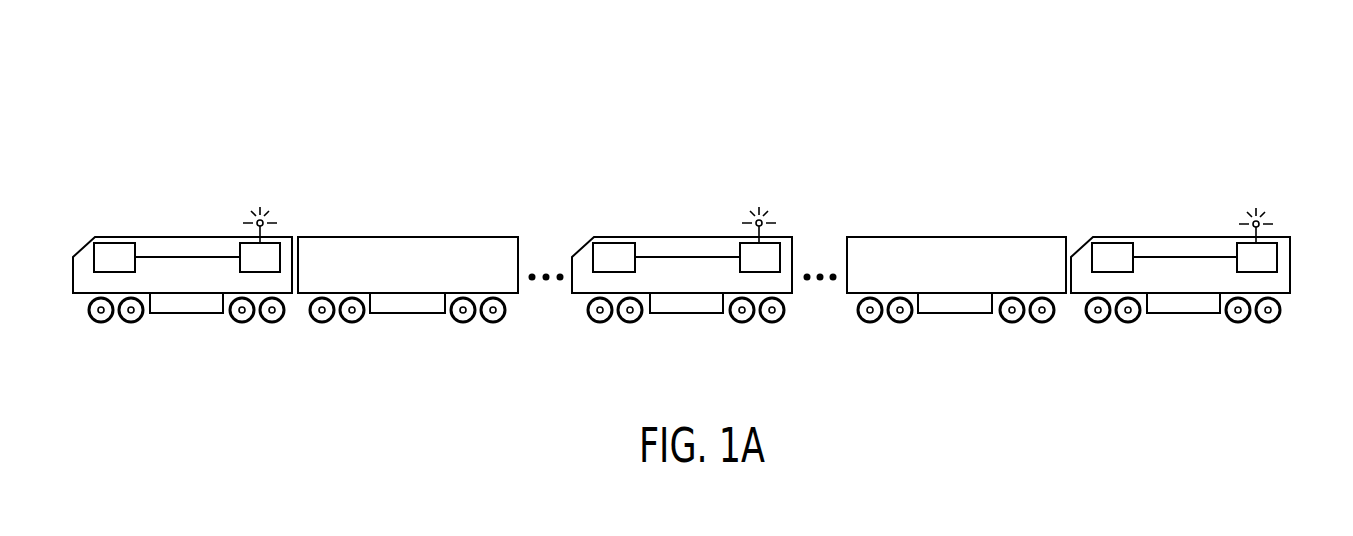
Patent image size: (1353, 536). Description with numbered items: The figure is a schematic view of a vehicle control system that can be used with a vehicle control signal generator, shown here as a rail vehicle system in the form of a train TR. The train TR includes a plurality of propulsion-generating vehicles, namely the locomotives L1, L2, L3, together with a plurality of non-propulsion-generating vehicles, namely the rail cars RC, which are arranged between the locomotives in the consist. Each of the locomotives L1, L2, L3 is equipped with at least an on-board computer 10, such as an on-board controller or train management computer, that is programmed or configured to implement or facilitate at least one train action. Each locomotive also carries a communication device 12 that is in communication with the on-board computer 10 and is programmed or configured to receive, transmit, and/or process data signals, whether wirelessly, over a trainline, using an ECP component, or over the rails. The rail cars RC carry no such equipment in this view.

The on-board computer 10 is at (103, 257).
The communication device 12 is at (280, 252).
The train TR is at (606, 92).
The locomotive L1 is at (132, 237).
The locomotive L2 is at (620, 237).
The locomotive L3 is at (1128, 237).
The rail car RC is at (973, 237).